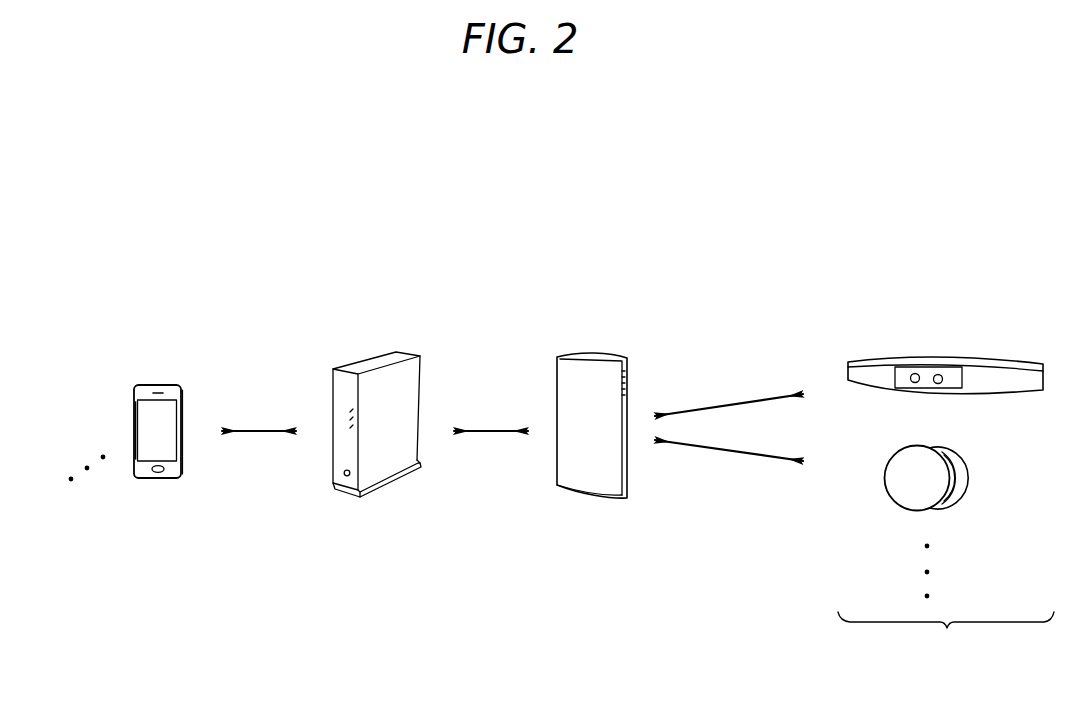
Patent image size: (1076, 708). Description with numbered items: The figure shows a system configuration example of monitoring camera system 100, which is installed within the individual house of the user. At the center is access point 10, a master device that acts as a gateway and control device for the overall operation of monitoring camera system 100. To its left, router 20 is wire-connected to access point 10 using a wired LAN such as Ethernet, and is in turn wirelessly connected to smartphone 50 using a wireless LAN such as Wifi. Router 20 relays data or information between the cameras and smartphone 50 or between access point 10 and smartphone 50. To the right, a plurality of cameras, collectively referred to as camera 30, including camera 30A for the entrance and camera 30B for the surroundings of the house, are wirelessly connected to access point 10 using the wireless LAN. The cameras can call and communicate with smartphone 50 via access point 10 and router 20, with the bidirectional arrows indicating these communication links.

The monitoring camera system 100 is at (536, 240).
The access point 10 is at (601, 353).
The router 20 is at (372, 355).
The camera 30 is at (946, 603).
The camera for an entrance 30A is at (975, 360).
The camera 30B is at (962, 498).
The smartphone 50 is at (154, 385).